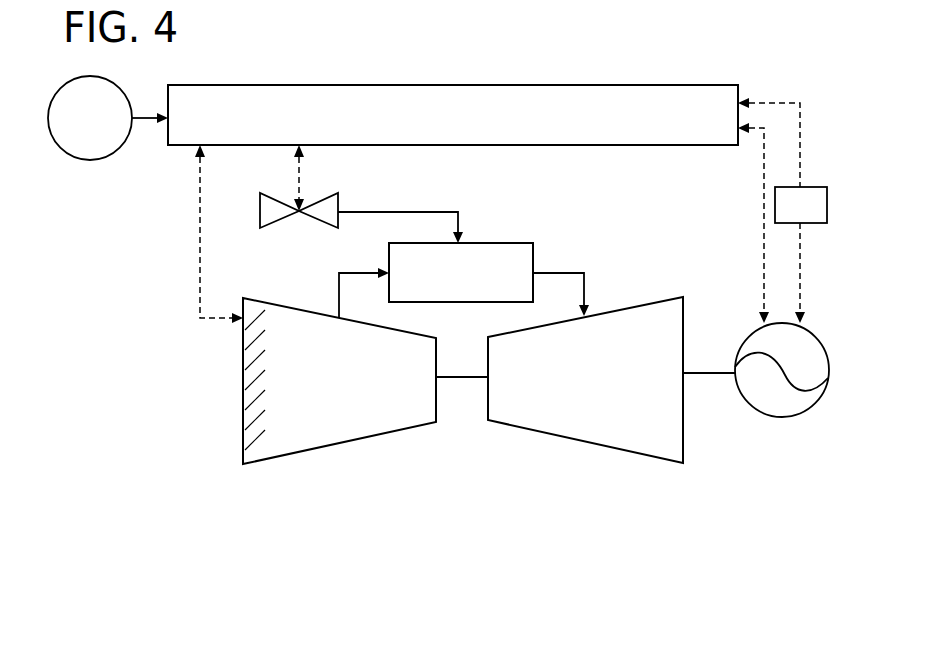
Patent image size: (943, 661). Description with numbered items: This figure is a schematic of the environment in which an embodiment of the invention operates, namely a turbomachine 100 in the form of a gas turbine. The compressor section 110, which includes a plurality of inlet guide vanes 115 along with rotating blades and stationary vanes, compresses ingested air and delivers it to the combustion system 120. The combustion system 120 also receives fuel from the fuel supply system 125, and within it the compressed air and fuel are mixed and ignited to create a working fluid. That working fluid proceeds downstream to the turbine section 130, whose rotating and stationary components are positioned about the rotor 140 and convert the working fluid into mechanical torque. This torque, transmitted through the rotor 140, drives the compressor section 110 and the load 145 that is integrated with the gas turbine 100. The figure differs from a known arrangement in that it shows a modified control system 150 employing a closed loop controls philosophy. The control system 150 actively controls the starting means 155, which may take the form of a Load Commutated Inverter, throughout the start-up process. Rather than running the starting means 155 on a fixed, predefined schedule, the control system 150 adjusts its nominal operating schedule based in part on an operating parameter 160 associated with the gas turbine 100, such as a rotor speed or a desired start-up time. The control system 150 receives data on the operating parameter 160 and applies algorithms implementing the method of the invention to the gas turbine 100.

The turbomachine 100 is at (147, 532).
The compressor section 110 is at (339, 381).
The inlet guide vanes 115 is at (242, 477).
The combustion system 120 is at (464, 280).
The fuel supply system 125 is at (338, 194).
The turbine section 130 is at (585, 380).
The rotor 140 is at (460, 377).
The load 145 is at (813, 332).
The turbine control system 150 is at (486, 204).
The starting means 155 is at (801, 205).
The operating parameter 160 is at (108, 118).